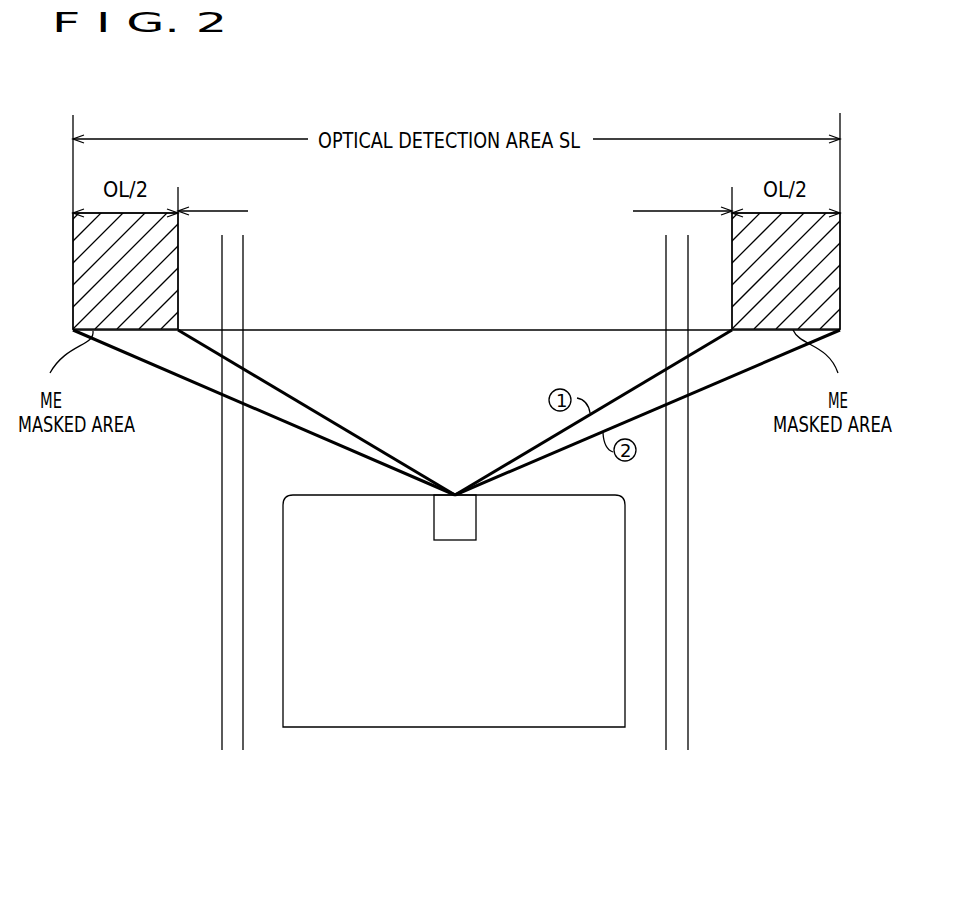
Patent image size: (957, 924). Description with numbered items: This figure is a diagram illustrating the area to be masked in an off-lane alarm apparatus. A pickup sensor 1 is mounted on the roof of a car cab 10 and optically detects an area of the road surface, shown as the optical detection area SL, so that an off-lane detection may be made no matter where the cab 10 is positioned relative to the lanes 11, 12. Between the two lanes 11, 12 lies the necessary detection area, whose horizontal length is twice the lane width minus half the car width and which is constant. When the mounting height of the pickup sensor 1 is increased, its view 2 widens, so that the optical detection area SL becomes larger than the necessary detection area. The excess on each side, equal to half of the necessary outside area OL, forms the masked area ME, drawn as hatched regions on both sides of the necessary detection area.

The pickup sensor 1 is at (476, 517).
The view 2 is at (455, 222).
The car cab 10 is at (368, 730).
The lane 11 is at (232, 563).
The lane 12 is at (675, 560).